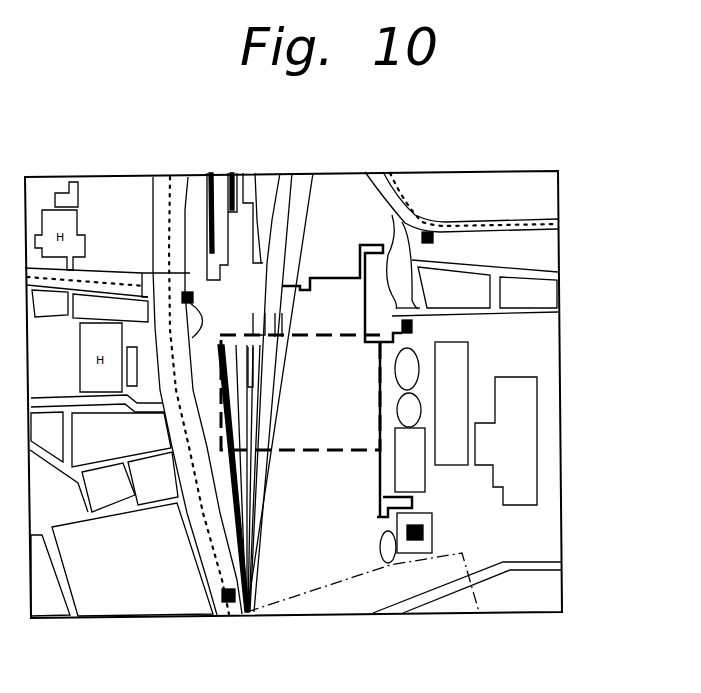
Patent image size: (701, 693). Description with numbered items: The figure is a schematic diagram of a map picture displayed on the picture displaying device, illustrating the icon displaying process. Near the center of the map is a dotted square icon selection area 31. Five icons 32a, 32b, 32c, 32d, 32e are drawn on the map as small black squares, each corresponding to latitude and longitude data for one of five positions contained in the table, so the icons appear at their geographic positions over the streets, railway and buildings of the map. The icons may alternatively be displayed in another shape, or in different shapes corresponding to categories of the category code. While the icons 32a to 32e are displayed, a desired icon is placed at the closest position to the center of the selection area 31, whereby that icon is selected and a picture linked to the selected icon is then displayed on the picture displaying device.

The icon selection area 31 is at (360, 383).
The icon 32a is at (187, 295).
The icon 32b is at (429, 234).
The icon 32c is at (222, 602).
The icon 32d is at (412, 326).
The icon 32e is at (423, 533).